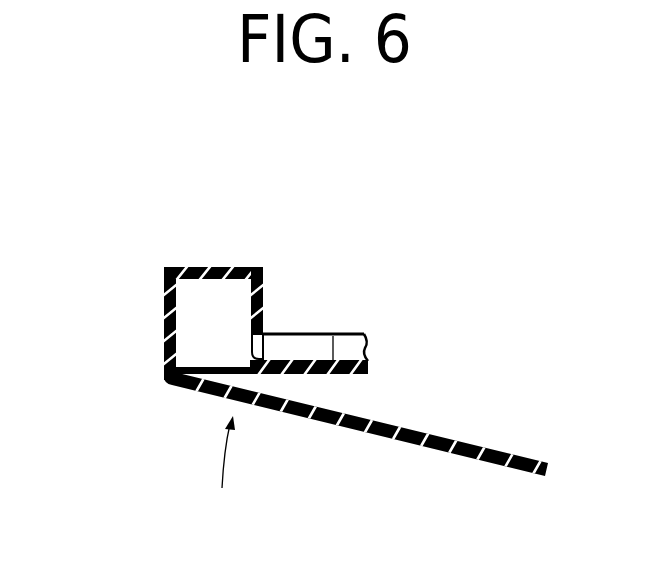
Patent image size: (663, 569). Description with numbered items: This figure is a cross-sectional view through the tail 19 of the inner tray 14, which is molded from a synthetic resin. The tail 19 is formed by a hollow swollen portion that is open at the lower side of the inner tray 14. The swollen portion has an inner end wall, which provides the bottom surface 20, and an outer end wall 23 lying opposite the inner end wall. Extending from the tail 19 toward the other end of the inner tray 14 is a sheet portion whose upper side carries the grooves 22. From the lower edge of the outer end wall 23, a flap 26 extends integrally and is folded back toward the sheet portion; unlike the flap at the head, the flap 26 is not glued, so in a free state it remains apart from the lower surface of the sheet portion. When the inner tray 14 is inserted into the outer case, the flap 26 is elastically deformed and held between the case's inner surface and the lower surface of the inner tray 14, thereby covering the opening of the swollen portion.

The inner tray 14 is at (218, 476).
The tail 19 is at (217, 268).
The bottom surface 20 is at (265, 306).
The grooves 22 is at (334, 336).
The outer end wall 23 is at (165, 322).
The flap 26 is at (393, 440).